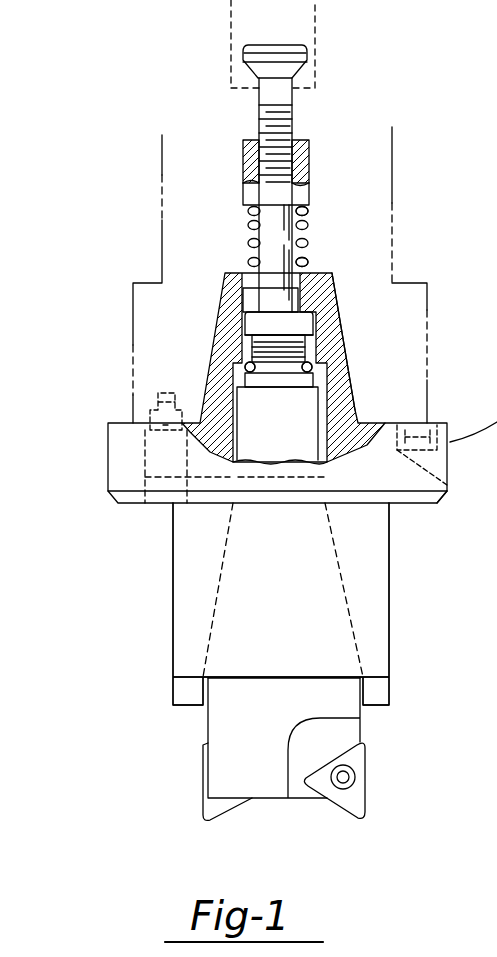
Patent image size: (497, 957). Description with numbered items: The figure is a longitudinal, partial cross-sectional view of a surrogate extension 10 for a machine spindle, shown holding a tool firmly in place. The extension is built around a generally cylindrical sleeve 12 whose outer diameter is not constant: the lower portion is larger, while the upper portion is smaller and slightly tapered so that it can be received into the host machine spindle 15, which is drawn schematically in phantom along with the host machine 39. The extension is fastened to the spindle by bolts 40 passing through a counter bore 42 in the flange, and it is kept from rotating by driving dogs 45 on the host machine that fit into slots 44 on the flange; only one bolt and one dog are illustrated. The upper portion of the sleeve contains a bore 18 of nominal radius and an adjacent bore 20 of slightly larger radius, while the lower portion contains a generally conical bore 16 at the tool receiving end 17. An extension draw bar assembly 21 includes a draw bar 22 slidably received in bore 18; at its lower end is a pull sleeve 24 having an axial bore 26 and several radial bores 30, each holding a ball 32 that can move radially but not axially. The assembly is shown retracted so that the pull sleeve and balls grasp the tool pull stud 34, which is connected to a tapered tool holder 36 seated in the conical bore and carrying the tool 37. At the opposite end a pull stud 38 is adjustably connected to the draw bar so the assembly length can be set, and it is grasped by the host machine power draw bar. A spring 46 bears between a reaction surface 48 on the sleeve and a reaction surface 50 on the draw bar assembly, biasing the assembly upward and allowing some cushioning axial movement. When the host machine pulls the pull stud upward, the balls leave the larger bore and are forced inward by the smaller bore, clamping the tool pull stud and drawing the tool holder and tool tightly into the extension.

The surrogate extension 10 is at (100, 458).
The sleeve 12 is at (343, 304).
The host machine spindle 15 is at (365, 162).
The conical bore 16 is at (340, 632).
The tool receiving end 17 is at (170, 720).
The bore 18 is at (328, 288).
The bore 20 is at (326, 395).
The extension draw bar assembly 21 is at (246, 229).
The draw bar 22 is at (300, 226).
The pull sleeve 24 is at (258, 305).
The axial bore 26 is at (262, 320).
The radial bores 30 is at (246, 366).
The ball 32 is at (313, 372).
The tool pull stud 34 is at (306, 342).
The tool holder 36 is at (340, 568).
The tool 37 is at (250, 727).
The pull stud 38 is at (300, 52).
The host machine 39 is at (160, 168).
The bolts 40 is at (150, 393).
The counter bore 42 is at (145, 505).
The slots 44 is at (433, 422).
The driving dogs 45 is at (448, 490).
The spring 46 is at (308, 214).
The reaction surface 48 is at (318, 274).
The reaction surface 50 is at (312, 163).